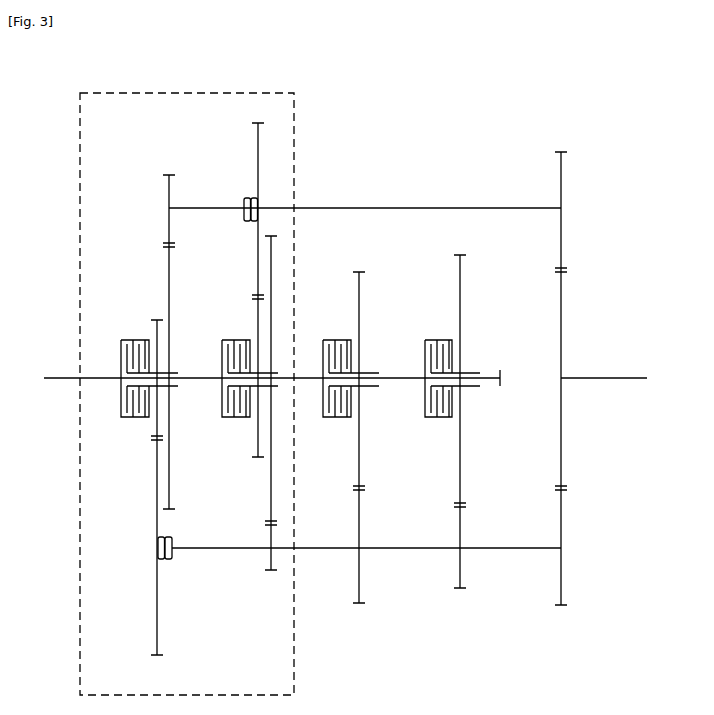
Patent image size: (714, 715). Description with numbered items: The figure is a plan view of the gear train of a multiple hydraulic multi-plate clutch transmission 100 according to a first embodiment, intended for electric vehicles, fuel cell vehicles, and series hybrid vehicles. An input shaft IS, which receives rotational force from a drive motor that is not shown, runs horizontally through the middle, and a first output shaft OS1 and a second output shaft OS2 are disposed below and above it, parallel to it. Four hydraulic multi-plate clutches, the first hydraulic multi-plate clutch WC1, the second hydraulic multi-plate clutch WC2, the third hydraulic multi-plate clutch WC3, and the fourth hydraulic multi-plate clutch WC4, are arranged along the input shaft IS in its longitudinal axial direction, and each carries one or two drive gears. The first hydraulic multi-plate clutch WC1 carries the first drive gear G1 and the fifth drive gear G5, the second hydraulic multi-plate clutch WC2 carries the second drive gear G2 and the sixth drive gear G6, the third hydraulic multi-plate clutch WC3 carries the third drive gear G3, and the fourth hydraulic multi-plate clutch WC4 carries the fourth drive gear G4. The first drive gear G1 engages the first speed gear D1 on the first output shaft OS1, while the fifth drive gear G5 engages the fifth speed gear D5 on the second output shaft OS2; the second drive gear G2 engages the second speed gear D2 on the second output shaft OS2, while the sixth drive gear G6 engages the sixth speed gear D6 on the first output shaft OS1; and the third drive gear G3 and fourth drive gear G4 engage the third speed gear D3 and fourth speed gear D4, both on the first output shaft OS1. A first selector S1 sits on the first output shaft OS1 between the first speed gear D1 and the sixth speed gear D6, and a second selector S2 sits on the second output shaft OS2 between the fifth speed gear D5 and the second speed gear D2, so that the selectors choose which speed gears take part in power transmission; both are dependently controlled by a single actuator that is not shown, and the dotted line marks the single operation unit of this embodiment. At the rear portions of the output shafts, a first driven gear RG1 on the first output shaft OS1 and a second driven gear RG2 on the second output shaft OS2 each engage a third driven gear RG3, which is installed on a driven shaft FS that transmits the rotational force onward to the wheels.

The multiple hydraulic multi-plate clutch transmission 100 is at (505, 106).
The input shaft IS is at (68, 378).
The first output shaft OS1 is at (315, 551).
The second output shaft OS2 is at (392, 207).
The driven shaft FS is at (612, 380).
The first driven gear RG1 is at (561, 528).
The second driven gear RG2 is at (561, 178).
The third driven gear RG3 is at (561, 337).
The first drive gear G1 is at (157, 328).
The second drive gear G2 is at (258, 313).
The third drive gear G3 is at (359, 305).
The fourth drive gear G4 is at (460, 297).
The fifth drive gear G5 is at (169, 275).
The sixth drive gear G6 is at (271, 266).
The first speed gear D1 is at (156, 555).
The second speed gear D2 is at (257, 200).
The third speed gear D3 is at (358, 554).
The fourth speed gear D4 is at (459, 554).
The fifth speed gear D5 is at (169, 201).
The sixth speed gear D6 is at (271, 555).
The first hydraulic multi-plate clutch WC1 is at (112, 440).
The second hydraulic multi-plate clutch WC2 is at (223, 438).
The third hydraulic multi-plate clutch WC3 is at (330, 443).
The fourth hydraulic multi-plate clutch WC4 is at (423, 438).
The first selector S1 is at (168, 560).
The second selector S2 is at (250, 197).